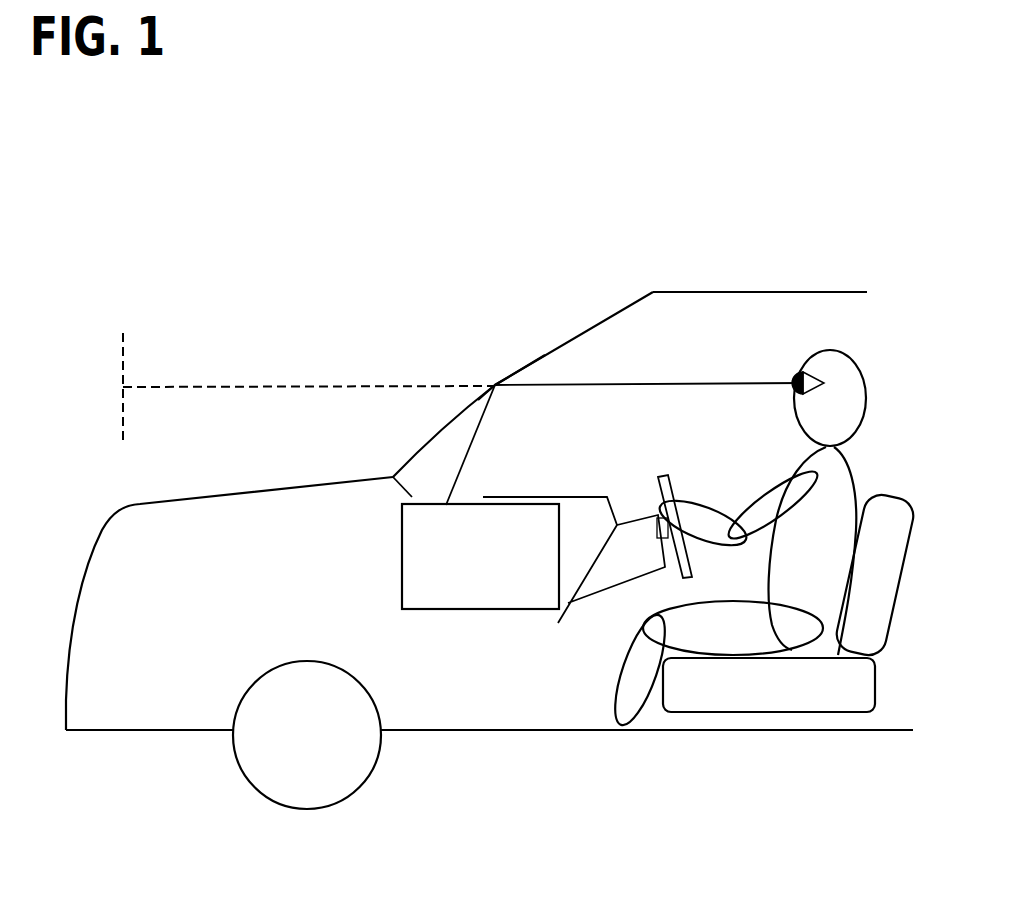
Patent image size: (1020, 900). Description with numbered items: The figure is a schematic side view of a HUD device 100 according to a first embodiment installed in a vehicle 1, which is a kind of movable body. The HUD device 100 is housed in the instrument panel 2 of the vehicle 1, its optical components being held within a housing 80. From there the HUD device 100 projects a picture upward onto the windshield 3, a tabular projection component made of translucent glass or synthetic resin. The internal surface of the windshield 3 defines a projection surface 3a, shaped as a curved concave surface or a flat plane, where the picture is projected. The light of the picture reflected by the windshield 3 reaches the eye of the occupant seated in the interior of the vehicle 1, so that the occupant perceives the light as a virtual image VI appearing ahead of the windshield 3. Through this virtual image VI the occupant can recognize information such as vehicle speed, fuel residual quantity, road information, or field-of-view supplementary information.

The vehicle 1 is at (838, 291).
The instrument panel 2 is at (578, 497).
The windshield 3 is at (427, 441).
The projection surface 3a is at (537, 371).
The housing 80 is at (402, 550).
The HUD device 100 is at (427, 632).
The virtual image VI is at (124, 350).